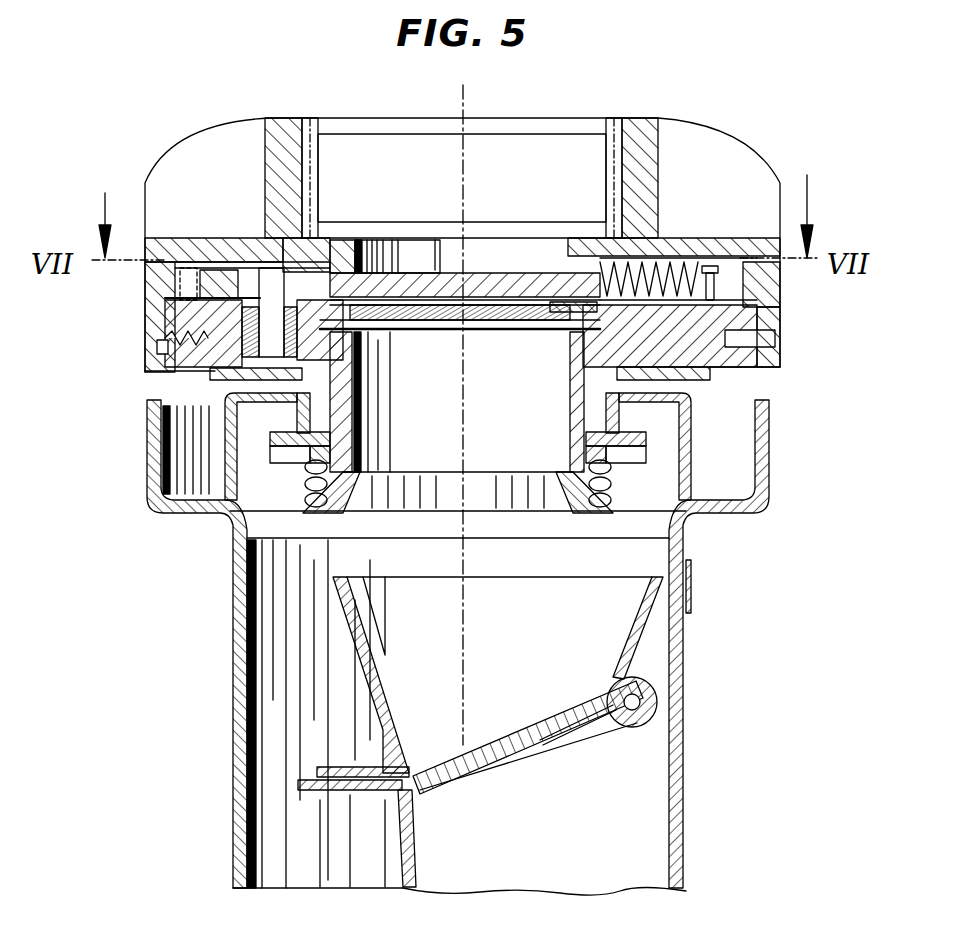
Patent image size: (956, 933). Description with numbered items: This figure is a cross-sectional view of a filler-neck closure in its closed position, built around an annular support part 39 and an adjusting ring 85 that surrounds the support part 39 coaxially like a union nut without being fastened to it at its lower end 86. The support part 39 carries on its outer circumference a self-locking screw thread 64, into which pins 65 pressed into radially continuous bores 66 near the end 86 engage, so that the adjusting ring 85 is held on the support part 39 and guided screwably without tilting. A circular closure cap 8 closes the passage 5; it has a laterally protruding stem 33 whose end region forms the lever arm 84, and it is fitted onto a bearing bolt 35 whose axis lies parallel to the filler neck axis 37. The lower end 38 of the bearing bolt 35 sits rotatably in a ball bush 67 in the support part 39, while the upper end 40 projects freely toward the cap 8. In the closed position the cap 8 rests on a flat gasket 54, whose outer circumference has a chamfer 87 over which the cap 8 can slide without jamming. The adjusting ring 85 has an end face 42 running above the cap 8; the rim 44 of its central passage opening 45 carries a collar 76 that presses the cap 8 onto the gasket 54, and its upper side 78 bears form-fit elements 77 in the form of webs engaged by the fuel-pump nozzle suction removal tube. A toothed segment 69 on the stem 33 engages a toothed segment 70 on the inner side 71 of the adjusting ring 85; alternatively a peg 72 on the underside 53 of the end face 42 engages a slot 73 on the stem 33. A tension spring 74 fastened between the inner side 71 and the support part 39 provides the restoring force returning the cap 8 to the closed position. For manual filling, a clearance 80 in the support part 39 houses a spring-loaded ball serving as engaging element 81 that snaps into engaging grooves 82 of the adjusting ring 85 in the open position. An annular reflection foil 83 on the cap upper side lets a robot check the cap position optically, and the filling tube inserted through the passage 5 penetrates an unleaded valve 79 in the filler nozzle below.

The filler neck axis 37 is at (467, 106).
The form-fit elements 77 is at (708, 142).
The adjusting ring 85 is at (742, 240).
The inner side of the adjusting ring 71 is at (197, 243).
The peg 72 is at (220, 243).
The slot 73 is at (237, 262).
The bearing bolt 35 is at (260, 265).
The upper end of the bearing bolt 40 is at (270, 262).
The end face 42 is at (292, 236).
The stem 33 is at (302, 262).
The underside of the adjusting ring end face 53 is at (358, 272).
The rim 44 is at (390, 265).
The central passage opening 45 is at (478, 248).
The closure cap 8 is at (493, 262).
The annular reflection foil 83 is at (540, 262).
The upper side of the adjusting ring end face 78 is at (725, 240).
The tension spring 74 is at (660, 282).
The collar 76 is at (392, 253).
The toothed segment 70 is at (165, 291).
The toothed segment 69 is at (160, 300).
The lever arm 84 is at (152, 318).
The clearance 80 is at (168, 337).
The engaging grooves 82 is at (170, 354).
The engaging elements 81 is at (182, 372).
The ball bush 67 is at (216, 380).
The chamfer 87 is at (372, 345).
The lower end of the bearing bolt 38 is at (368, 372).
The flat gasket 54 is at (560, 320).
The passage 5 is at (503, 404).
The self-locking screw thread 64 is at (790, 302).
The radially continuous bores 66 is at (776, 327).
The pins 65 is at (770, 347).
The lower end of the adjusting ring 86 is at (712, 375).
The support part 39 is at (715, 382).
The unleaded valve 79 is at (513, 738).